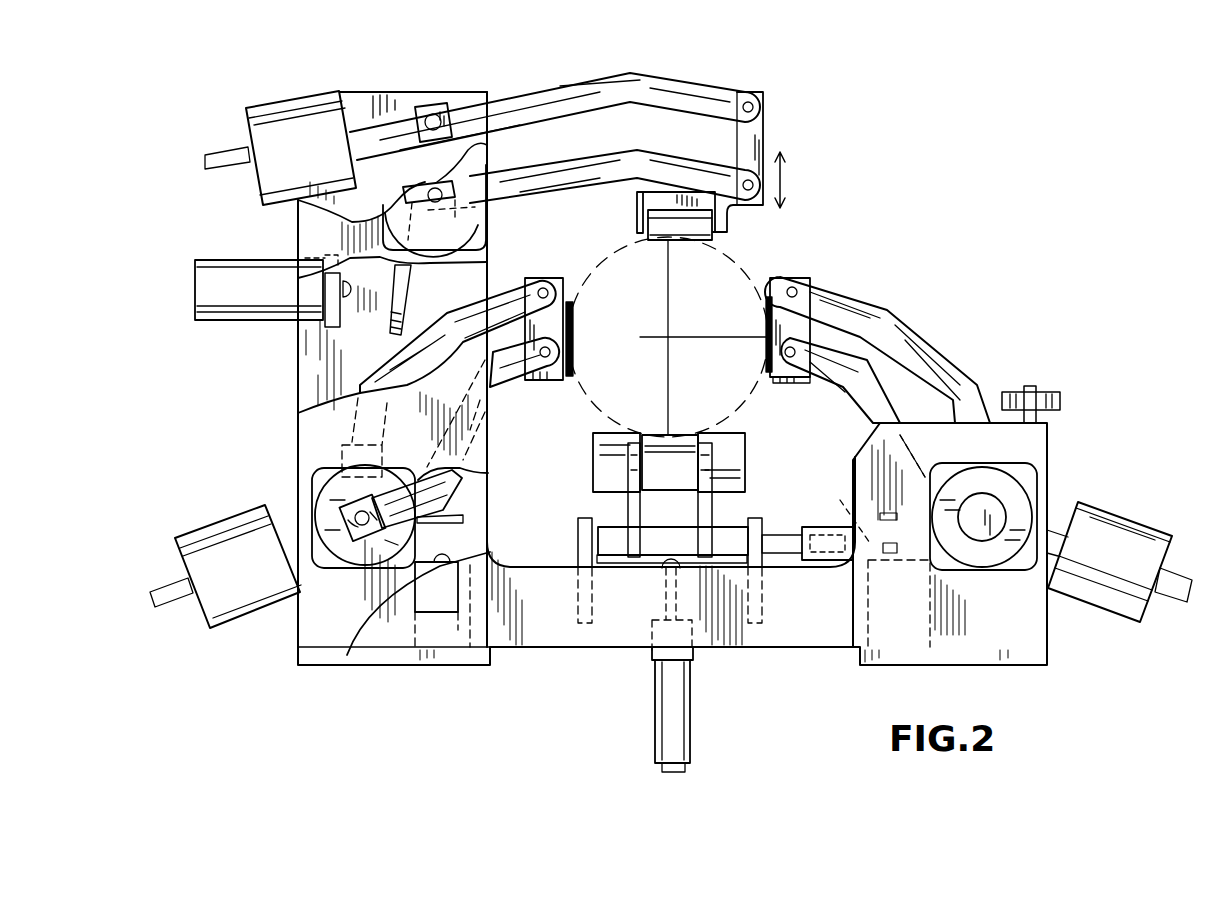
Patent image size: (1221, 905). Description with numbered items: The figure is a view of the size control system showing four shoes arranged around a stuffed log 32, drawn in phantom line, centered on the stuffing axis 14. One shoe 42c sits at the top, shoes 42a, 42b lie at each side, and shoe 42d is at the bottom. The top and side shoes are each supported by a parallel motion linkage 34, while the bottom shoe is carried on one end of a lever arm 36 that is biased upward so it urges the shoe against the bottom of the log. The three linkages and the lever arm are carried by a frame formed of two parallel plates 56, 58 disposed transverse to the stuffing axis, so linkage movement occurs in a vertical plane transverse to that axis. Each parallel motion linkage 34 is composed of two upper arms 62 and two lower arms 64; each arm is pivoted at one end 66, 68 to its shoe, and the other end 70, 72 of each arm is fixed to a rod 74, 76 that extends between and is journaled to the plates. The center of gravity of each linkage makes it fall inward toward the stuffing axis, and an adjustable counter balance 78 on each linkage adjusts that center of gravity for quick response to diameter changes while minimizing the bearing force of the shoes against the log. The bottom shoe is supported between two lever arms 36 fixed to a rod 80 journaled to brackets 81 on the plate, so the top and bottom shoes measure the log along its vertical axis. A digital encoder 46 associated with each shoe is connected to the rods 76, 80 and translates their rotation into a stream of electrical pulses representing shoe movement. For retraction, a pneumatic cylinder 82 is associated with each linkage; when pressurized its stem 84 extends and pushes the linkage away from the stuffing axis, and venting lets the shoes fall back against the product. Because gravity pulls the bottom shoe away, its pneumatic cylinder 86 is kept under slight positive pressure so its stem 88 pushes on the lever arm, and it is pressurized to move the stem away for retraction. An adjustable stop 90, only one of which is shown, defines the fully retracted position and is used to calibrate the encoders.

The stuffing axis 14 is at (671, 333).
The stuffed log 32 is at (826, 254).
The parallel motion linkage 34 is at (600, 63).
The lever arm 36 is at (703, 500).
The shoe 42a is at (574, 325).
The shoe 42b is at (764, 345).
The shoe 42c is at (735, 250).
The shoe 42d is at (656, 436).
The digital encoder 46 is at (466, 223).
The plate 56 is at (307, 370).
The plate 58 is at (307, 233).
The upper arm 62 is at (654, 80).
The lower arm 64 is at (590, 163).
The pivoted end of arm 66 is at (749, 92).
The pivoted end of arm 68 is at (746, 172).
The other end of arm 70 is at (465, 95).
The other end of arm 72 is at (432, 188).
The rod 74 is at (430, 108).
The rod 76 is at (453, 172).
The adjustable counter balance 78 is at (278, 100).
The rod 80 is at (730, 530).
The bracket 81 is at (578, 530).
The pneumatic cylinder 82 is at (205, 290).
The stem 84 is at (352, 288).
The pneumatic cylinder 86 is at (693, 730).
The stem 88 is at (665, 595).
The adjustable stop 90 is at (1032, 388).